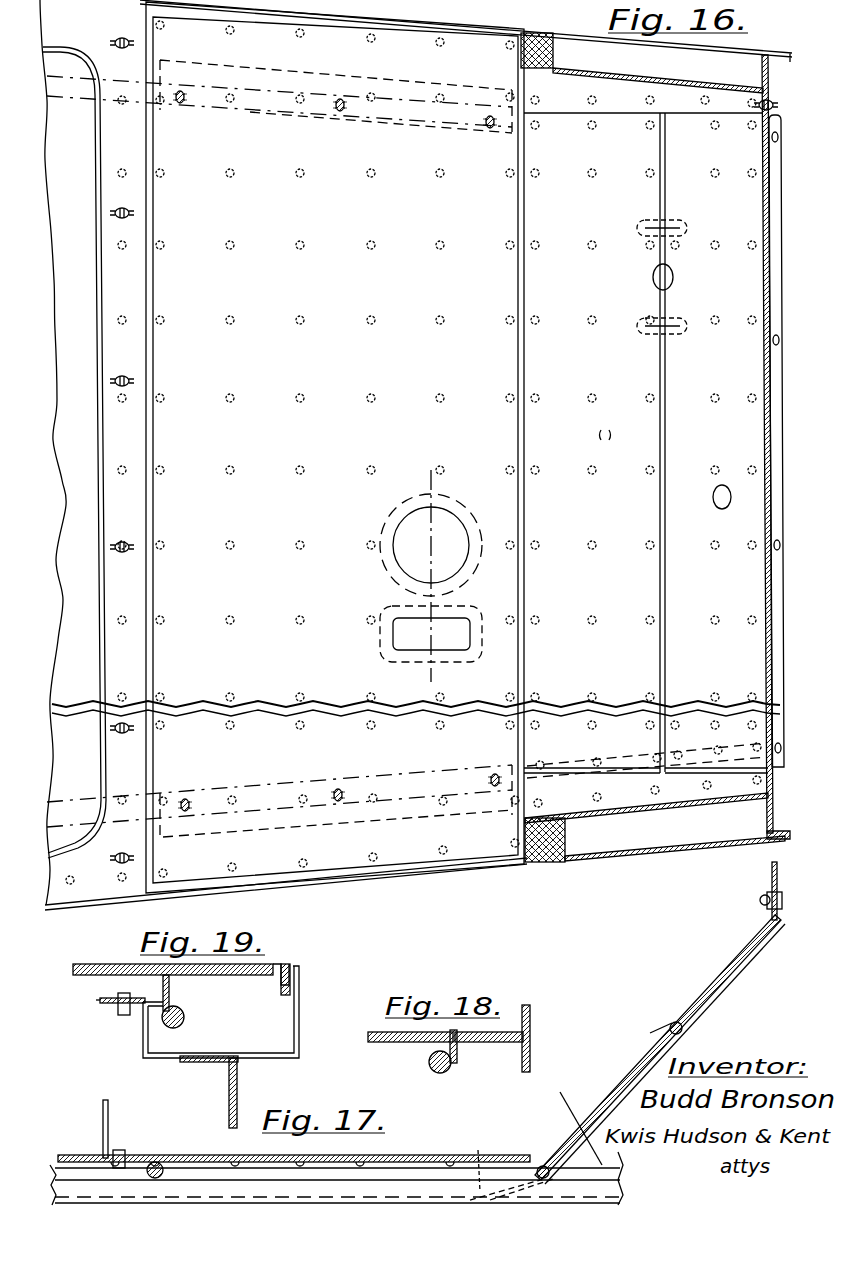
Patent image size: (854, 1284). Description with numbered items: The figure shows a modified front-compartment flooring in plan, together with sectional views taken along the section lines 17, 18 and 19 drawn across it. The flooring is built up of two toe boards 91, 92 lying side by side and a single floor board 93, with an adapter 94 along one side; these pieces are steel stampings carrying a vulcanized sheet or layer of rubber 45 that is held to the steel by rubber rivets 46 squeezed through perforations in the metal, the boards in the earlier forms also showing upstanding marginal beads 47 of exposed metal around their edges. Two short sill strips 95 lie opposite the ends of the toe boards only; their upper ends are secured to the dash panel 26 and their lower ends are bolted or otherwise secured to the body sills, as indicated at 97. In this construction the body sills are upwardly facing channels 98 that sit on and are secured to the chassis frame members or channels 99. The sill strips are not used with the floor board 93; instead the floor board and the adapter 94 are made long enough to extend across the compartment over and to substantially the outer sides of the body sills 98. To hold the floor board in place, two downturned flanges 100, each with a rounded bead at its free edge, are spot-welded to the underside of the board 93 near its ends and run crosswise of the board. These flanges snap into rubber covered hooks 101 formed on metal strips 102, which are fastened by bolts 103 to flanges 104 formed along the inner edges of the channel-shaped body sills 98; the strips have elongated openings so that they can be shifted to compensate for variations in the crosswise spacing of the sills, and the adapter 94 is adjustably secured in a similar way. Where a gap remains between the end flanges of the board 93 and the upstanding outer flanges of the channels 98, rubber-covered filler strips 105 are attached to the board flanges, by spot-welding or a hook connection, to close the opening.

In FIG. 16, the section line 17— 17 is at (800, 170).
In FIG. 16, the section line 18— 18 is at (707, 826).
In FIG. 16, the section line 19— 19 is at (348, 872).
In FIG. 17, the dash panel 26 is at (778, 876).
In FIG. 16, the sheet or layer of rubber 45 is at (431, 554).
In FIG. 16, the rubber rivets 46 is at (305, 468).
In FIG. 17, the upstanding marginal beads 47 is at (672, 1024).
In FIG. 16, the toe board 91 is at (716, 447).
In FIG. 18, the toe board 91 is at (397, 1044).
In FIG. 17, the toe board 91 is at (735, 965).
In FIG. 16, the toe board 92 is at (605, 443).
In FIG. 17, the toe board 92 is at (648, 1035).
In FIG. 16, the floor board 93 is at (336, 450).
In FIG. 19, the floor board 93 is at (74, 964).
In FIG. 17, the floor board 93 is at (427, 1150).
In FIG. 16, the adapter 94 is at (140, 358).
In FIG. 16, the sill strips 95 is at (653, 447).
In FIG. 18, the sill strips 95 is at (468, 1045).
In FIG. 17, the bolted connection 97 is at (478, 1159).
In FIG. 19, the body sills 98 is at (300, 1010).
In FIG. 17, the body sills 98 is at (566, 1125).
In FIG. 19, the chassis frame members 99 is at (240, 1085).
In FIG. 16, the downturned flanges 100 is at (285, 120).
In FIG. 19, the downturned flanges 100 is at (170, 990).
In FIG. 19, the rubber covered hooks 101 is at (184, 1023).
In FIG. 19, the metal strips 102 is at (102, 999).
In FIG. 19, the bolts 103 is at (125, 1012).
In FIG. 19, the flanges 104 is at (108, 1002).
In FIG. 19, the filler strips 105 is at (287, 963).